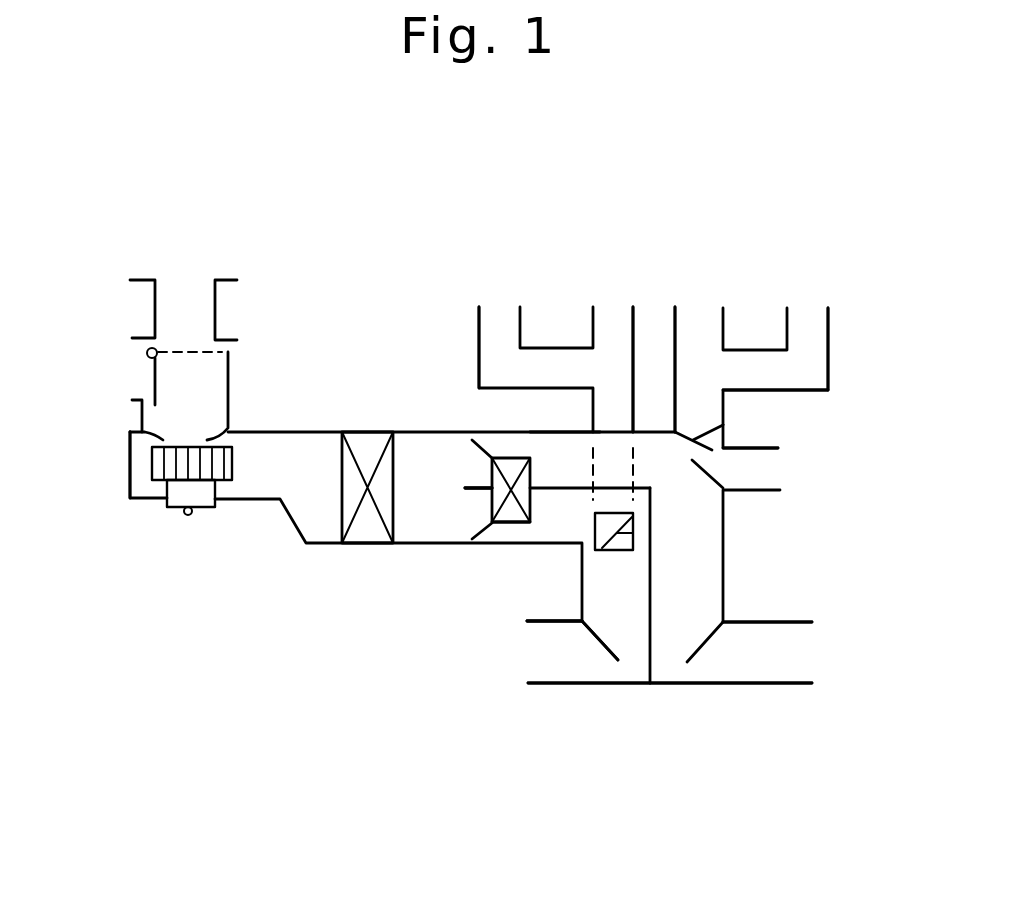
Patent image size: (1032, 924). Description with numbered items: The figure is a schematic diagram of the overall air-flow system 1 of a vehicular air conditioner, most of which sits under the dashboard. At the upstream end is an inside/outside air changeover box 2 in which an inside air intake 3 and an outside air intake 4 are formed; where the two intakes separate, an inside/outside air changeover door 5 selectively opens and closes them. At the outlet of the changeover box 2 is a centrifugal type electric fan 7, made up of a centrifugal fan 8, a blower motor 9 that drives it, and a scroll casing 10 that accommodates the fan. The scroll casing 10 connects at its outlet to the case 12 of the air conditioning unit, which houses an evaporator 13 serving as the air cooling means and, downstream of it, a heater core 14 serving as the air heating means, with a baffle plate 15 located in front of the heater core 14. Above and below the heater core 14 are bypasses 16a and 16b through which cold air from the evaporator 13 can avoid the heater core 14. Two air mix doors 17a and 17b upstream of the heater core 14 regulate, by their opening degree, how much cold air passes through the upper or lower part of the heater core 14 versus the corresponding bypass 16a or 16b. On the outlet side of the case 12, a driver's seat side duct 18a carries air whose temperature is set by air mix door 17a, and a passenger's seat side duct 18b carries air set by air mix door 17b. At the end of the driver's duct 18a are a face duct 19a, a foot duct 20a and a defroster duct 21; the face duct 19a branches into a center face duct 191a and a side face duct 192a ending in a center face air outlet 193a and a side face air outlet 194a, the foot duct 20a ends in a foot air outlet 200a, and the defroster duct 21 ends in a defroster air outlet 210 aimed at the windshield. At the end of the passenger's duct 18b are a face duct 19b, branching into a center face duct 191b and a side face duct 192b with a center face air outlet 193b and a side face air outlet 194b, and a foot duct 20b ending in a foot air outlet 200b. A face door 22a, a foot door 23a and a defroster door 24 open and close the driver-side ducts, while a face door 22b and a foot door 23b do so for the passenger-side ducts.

The air-flow system 1 is at (160, 600).
The inside/outside air changeover box 2 is at (130, 307).
The inside air intake 3 is at (147, 343).
The outside air intake 4 is at (158, 315).
The inside/outside air changeover door 5 is at (155, 382).
The centrifugal type electric fan 7 is at (122, 515).
The centrifugal fan 8 is at (163, 465).
The blower motor 9 is at (205, 500).
The scroll casing 10 is at (145, 500).
The case 12 is at (408, 547).
The evaporator 13 is at (355, 538).
The heater core 14 is at (490, 478).
The baffle plate 15 is at (465, 490).
The bypass 16a is at (492, 438).
The bypass 16b is at (520, 537).
The air mix door 17a is at (487, 453).
The air mix door 17b is at (488, 530).
The driver's seat side duct 18a is at (573, 430).
The passenger's seat side duct 18b is at (557, 548).
The face duct 19a is at (725, 397).
The face duct 19b is at (635, 382).
The center face duct 191a is at (730, 327).
The center face duct 191b is at (593, 330).
The side face duct 192a is at (830, 342).
The side face duct 192b is at (478, 343).
The center face air outlet 193a is at (700, 315).
The center face air outlet 193b is at (612, 312).
The side face air outlet 194a is at (808, 315).
The side face air outlet 194b is at (500, 317).
The foot duct 20a is at (783, 622).
The foot duct 20b is at (553, 687).
The foot air outlet 200a is at (777, 652).
The foot air outlet 200b is at (535, 655).
The defroster duct 21 is at (763, 493).
The defroster air outlet 210 is at (768, 470).
The face door 22a is at (727, 423).
The face door 22b is at (617, 550).
The foot door 23a is at (702, 653).
The foot door 23b is at (602, 655).
The defroster door 24 is at (710, 477).